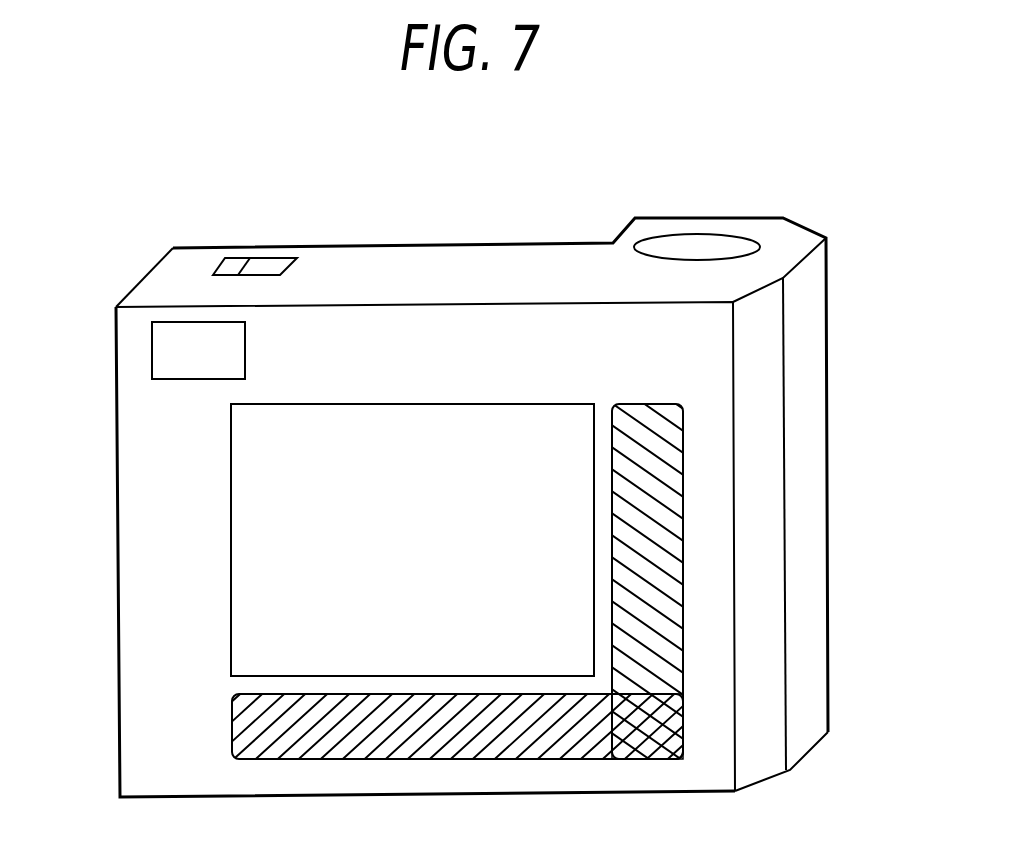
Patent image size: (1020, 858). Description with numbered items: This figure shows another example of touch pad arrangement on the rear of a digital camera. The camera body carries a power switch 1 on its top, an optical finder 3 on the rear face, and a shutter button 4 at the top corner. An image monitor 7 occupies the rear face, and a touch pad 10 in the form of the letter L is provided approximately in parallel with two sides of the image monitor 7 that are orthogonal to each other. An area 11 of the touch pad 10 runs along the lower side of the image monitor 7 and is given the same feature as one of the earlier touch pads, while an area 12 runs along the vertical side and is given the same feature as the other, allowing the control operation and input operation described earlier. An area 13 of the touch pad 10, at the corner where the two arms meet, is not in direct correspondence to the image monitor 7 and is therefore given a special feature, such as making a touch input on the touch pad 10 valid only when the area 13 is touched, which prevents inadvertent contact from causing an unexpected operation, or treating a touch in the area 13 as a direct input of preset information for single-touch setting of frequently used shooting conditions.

The power switch 1 is at (260, 268).
The optical finder 3 is at (152, 350).
The shutter button 4 is at (695, 243).
The image monitor 7 is at (231, 540).
The touch pad 10 is at (682, 538).
The area 11 is at (250, 729).
The area 12 is at (645, 467).
The area 13 is at (660, 730).